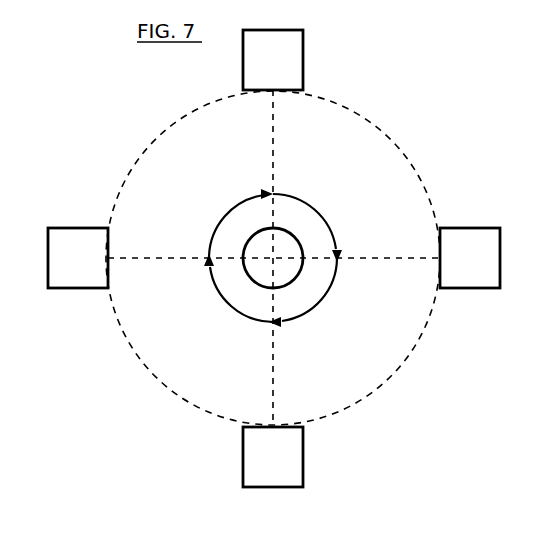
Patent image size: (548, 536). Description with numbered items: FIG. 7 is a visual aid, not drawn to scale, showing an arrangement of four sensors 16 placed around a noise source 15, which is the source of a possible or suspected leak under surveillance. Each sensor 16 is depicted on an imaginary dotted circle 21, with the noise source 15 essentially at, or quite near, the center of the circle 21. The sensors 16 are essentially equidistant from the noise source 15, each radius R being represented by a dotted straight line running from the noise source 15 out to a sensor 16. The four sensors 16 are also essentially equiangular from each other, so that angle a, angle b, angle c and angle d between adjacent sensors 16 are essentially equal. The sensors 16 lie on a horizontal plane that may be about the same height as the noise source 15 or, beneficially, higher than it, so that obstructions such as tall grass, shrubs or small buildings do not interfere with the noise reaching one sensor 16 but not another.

The noise source 15 is at (262, 267).
The sensor 16 is at (262, 69).
The imaginary circle 21 is at (369, 121).
The radius R is at (273, 128).
The angle a is at (308, 201).
The angle b is at (314, 311).
The angle c is at (232, 311).
The angle d is at (238, 201).